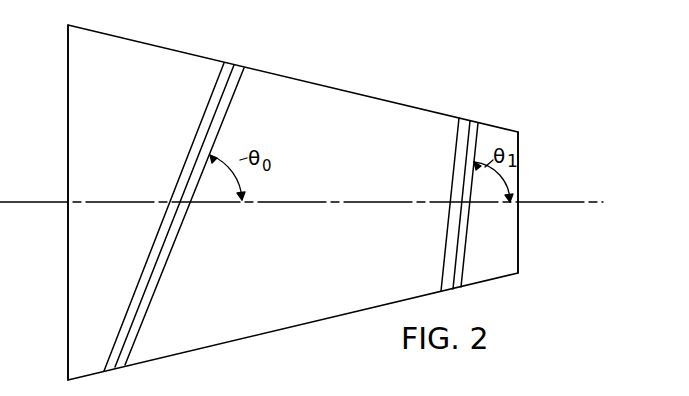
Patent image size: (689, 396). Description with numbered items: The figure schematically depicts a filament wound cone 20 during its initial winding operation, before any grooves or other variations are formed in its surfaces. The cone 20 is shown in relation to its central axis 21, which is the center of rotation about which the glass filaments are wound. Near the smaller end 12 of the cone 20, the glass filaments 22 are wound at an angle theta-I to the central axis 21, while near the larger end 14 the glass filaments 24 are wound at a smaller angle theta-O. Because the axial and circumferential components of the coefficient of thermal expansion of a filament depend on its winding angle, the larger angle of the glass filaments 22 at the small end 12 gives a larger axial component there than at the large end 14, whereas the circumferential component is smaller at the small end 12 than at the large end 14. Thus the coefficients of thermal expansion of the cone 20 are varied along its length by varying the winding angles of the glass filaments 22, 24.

The smaller end 12 is at (519, 238).
The larger end 14 is at (67, 323).
The filament wound cone 20 is at (519, 150).
The central axis 21 is at (577, 203).
The glass filaments 22 is at (476, 129).
The glass filaments 24 is at (252, 47).